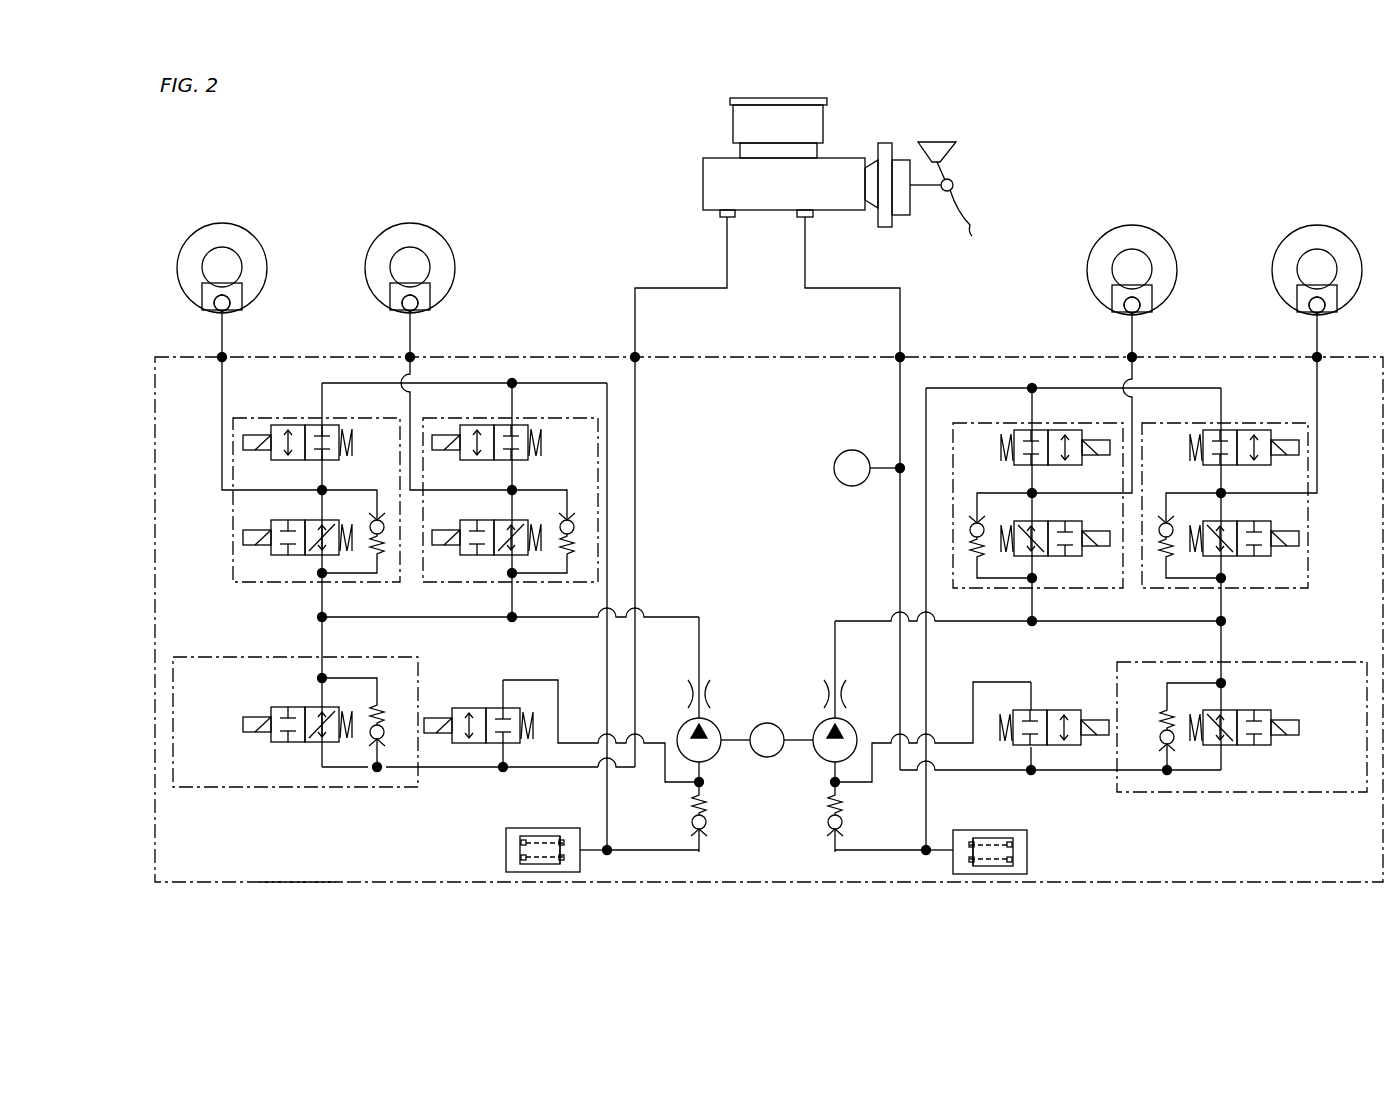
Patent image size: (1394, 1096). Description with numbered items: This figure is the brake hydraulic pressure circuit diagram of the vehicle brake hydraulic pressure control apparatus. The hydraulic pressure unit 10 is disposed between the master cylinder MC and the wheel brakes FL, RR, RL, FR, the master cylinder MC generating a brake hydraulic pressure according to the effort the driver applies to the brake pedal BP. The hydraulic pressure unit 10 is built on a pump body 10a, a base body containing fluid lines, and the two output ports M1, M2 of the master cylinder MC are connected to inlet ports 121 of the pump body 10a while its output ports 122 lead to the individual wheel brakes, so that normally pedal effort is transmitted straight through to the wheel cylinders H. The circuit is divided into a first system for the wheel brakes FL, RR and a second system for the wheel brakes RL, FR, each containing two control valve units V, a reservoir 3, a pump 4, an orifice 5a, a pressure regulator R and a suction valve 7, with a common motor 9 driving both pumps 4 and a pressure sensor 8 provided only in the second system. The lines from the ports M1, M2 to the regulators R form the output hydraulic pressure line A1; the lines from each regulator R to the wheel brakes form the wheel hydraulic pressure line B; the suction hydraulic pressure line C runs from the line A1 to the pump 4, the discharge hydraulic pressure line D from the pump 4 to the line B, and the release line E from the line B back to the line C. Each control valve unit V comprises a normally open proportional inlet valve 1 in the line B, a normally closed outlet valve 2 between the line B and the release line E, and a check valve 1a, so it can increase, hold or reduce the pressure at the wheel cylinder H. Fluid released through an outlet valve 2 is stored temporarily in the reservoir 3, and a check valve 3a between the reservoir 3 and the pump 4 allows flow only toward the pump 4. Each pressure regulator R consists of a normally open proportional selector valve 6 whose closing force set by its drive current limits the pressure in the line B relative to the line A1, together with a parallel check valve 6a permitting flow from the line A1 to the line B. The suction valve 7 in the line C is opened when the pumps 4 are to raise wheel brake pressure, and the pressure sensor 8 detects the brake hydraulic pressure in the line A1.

The inlet valve 1 is at (285, 556).
The check valve 1a is at (381, 521).
The outlet valve 2 is at (345, 412).
The reservoir 3 is at (498, 858).
The check valve 3a is at (706, 824).
The pump 4 is at (718, 758).
The orifice 5a is at (710, 688).
The selector valve 6 is at (288, 743).
The check valve 6a is at (385, 732).
The suction valve 7 is at (455, 707).
The pressure sensor 8 is at (834, 468).
The motor 9 is at (772, 723).
The hydraulic pressure unit 10 is at (976, 336).
The pump body 10a is at (298, 881).
The inlet port 121 is at (634, 356).
The output port 122 is at (224, 356).
The master cylinder MC is at (705, 175).
The brake pedal BP is at (968, 228).
The output port M1 is at (722, 218).
The output port M2 is at (806, 218).
The wheel brake FL is at (223, 221).
The wheel brake RR is at (411, 221).
The wheel brake RL is at (1133, 223).
The wheel brake FR is at (1319, 223).
The wheel cylinder H is at (232, 302).
The output hydraulic pressure line A1 is at (636, 428).
The wheel hydraulic pressure line B is at (224, 392).
The suction hydraulic pressure line C is at (556, 748).
The discharge hydraulic pressure line D is at (668, 616).
The release line E is at (514, 382).
The control valve unit V is at (232, 518).
The pressure regulator R is at (212, 788).